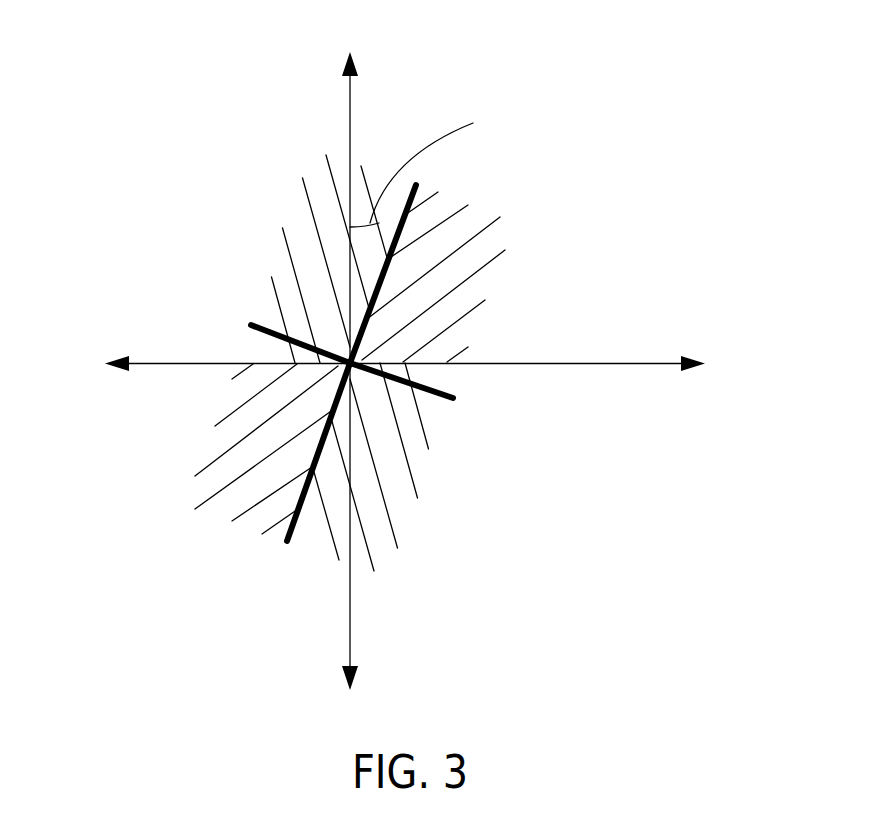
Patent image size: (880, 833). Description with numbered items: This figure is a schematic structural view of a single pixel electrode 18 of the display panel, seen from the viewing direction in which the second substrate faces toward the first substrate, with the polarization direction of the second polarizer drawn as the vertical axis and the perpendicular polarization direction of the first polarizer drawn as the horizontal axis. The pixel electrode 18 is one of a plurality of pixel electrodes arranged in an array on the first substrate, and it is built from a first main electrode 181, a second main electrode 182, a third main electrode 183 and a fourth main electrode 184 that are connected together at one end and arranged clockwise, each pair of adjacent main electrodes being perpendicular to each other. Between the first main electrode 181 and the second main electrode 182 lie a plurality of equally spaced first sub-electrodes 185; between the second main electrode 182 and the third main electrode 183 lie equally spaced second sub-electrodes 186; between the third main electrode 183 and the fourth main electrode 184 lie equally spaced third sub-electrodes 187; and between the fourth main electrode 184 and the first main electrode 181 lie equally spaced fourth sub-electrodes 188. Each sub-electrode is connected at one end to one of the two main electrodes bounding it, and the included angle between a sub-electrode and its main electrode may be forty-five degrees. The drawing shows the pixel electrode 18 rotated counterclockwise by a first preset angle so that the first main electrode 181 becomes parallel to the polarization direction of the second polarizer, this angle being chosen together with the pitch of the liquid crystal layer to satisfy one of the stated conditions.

The pixel electrode 18 is at (432, 28).
The first main electrode 181 is at (417, 184).
The second main electrode 182 is at (456, 397).
The third main electrode 183 is at (287, 541).
The fourth main electrode 184 is at (252, 322).
The first sub-electrodes 185 is at (470, 278).
The second sub-electrodes 186 is at (410, 445).
The third sub-electrodes 187 is at (248, 400).
The fourth sub-electrodes 188 is at (302, 178).